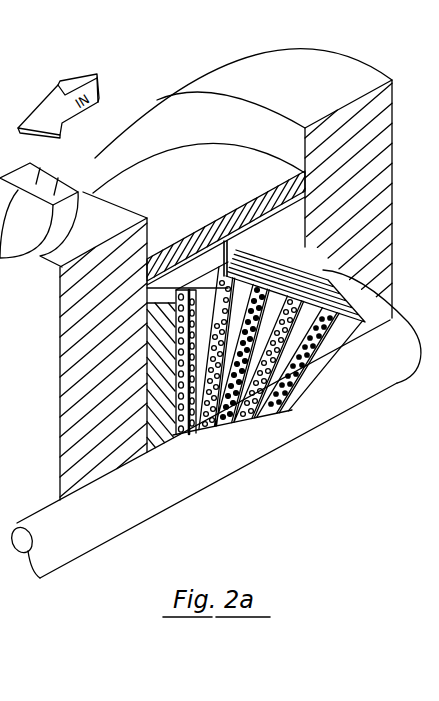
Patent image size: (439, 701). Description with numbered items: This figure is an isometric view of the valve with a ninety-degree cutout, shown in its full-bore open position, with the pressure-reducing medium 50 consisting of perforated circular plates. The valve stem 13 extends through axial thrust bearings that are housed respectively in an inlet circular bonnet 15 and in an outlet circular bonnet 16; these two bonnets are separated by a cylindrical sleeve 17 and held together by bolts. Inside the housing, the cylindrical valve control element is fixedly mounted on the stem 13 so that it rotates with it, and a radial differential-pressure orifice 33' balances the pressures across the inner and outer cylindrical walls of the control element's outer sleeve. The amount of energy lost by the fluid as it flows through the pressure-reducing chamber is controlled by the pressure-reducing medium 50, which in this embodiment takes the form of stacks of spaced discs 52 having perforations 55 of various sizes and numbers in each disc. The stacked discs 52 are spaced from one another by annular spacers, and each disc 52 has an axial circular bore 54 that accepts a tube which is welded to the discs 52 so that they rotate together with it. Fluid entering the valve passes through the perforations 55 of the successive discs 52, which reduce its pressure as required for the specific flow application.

The valve stem 13 is at (70, 545).
The inlet circular bonnet 15 is at (293, 86).
The outlet circular bonnet 16 is at (101, 236).
The cylindrical sleeve 17 is at (187, 202).
The radial differential-pressure orifice 33' is at (226, 229).
The pressure-reducing medium 50 is at (296, 398).
The stacked discs 52 is at (393, 320).
The axial circular bore 54 is at (198, 435).
The perforations 55 is at (228, 418).